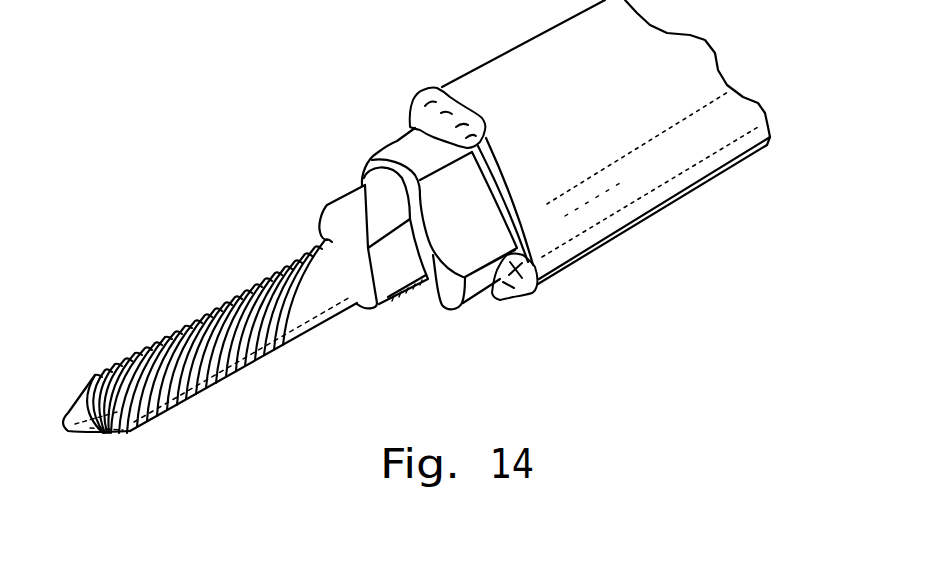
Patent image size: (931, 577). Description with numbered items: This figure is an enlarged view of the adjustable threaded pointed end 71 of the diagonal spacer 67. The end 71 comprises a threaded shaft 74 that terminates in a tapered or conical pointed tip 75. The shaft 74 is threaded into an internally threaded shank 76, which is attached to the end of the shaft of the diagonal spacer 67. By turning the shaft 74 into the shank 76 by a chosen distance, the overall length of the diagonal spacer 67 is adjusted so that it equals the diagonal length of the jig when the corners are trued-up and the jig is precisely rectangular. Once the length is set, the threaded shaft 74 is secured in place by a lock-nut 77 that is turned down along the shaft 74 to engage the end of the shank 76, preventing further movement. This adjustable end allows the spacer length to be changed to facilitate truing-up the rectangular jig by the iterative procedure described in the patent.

The diagonal spacer 67 is at (670, 201).
The threaded pointed end 71 is at (187, 422).
The threaded shaft 74 is at (247, 365).
The pointed tip 75 is at (80, 426).
The internally threaded shank 76 is at (462, 303).
The lock-nut 77 is at (343, 213).